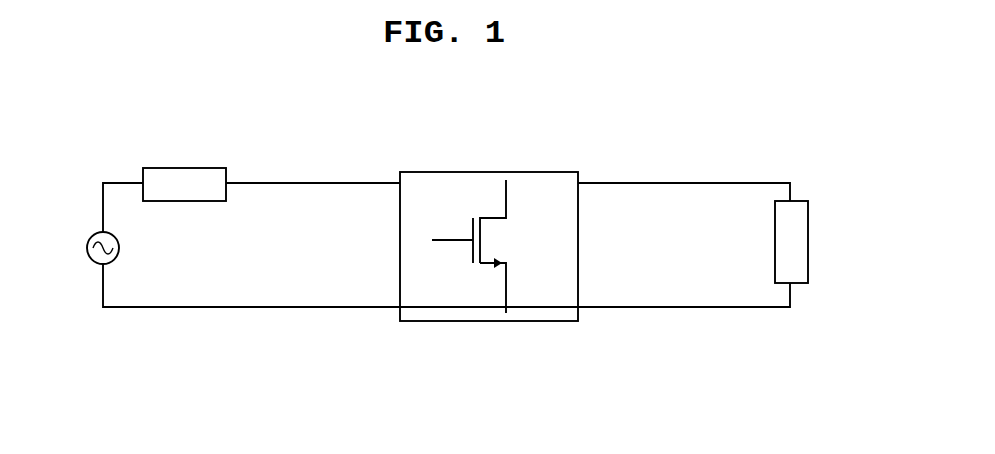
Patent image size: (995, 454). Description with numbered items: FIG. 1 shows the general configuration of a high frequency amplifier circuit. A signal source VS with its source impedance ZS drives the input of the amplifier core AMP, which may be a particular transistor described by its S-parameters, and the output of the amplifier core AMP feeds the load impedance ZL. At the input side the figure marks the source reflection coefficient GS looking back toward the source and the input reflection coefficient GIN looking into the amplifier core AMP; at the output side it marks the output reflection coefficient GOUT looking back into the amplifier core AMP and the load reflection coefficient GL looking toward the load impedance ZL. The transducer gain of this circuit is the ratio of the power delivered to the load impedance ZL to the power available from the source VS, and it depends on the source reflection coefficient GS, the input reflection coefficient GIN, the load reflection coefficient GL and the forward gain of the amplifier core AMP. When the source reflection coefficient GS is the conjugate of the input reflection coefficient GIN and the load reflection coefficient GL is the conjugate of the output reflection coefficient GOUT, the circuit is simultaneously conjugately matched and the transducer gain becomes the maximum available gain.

The source voltage VS is at (86, 248).
The source impedance ZS is at (184, 171).
The amplifier core AMP is at (489, 221).
The load impedance ZL is at (806, 242).
The source reflection coefficient GS is at (254, 201).
The input reflection coefficient GIN is at (343, 201).
The output reflection coefficient GOUT is at (632, 202).
The load reflection coefficient GL is at (720, 202).